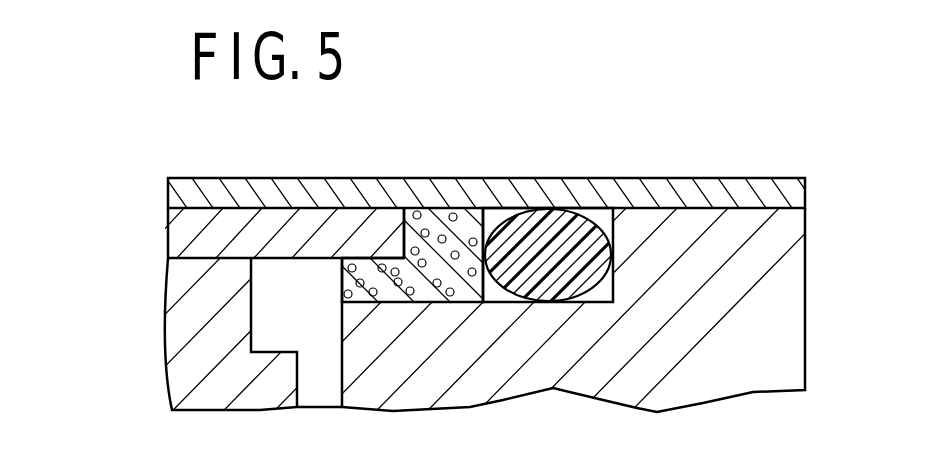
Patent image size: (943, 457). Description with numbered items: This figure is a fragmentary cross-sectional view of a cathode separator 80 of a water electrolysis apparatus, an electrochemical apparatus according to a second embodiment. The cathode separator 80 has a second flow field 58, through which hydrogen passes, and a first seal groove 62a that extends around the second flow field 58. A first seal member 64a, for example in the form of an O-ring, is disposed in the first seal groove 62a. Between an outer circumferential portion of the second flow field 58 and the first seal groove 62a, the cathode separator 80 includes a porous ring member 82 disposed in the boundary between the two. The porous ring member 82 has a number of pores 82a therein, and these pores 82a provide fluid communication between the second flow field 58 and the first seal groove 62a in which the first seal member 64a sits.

The cathode separator 80 is at (733, 98).
The porous ring member 82 is at (426, 215).
The pores 82a is at (453, 213).
The first seal member 64a is at (573, 240).
The first seal groove 62a is at (613, 289).
The second flow field 58 is at (285, 309).